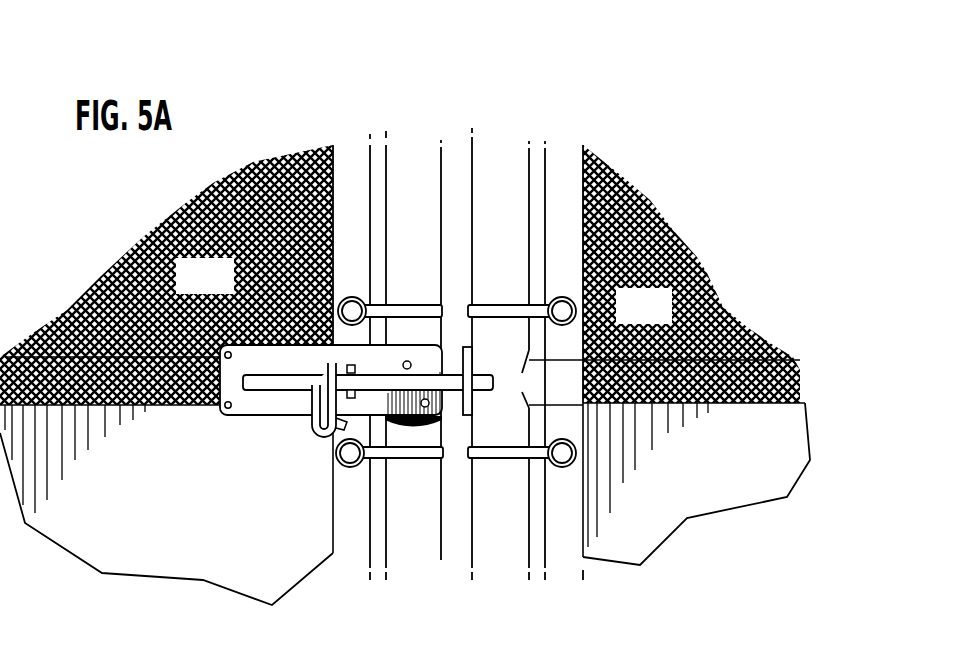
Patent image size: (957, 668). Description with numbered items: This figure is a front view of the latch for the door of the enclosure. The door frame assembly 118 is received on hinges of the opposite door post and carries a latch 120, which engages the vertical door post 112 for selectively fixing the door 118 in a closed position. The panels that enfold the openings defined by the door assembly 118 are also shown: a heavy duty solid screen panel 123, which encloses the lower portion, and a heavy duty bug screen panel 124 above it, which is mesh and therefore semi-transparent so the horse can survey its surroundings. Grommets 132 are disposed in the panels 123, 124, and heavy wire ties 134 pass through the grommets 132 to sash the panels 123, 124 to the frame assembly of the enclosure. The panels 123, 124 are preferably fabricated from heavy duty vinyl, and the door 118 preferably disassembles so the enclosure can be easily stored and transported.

The vertical door post 112 is at (499, 190).
The door frame assembly 118 is at (411, 183).
The latch 120 is at (246, 402).
The solid screen panel 123 is at (57, 525).
The bug screen panel 124 is at (229, 290).
The grommet 132 is at (340, 298).
The heavy wire tie 134 is at (417, 304).